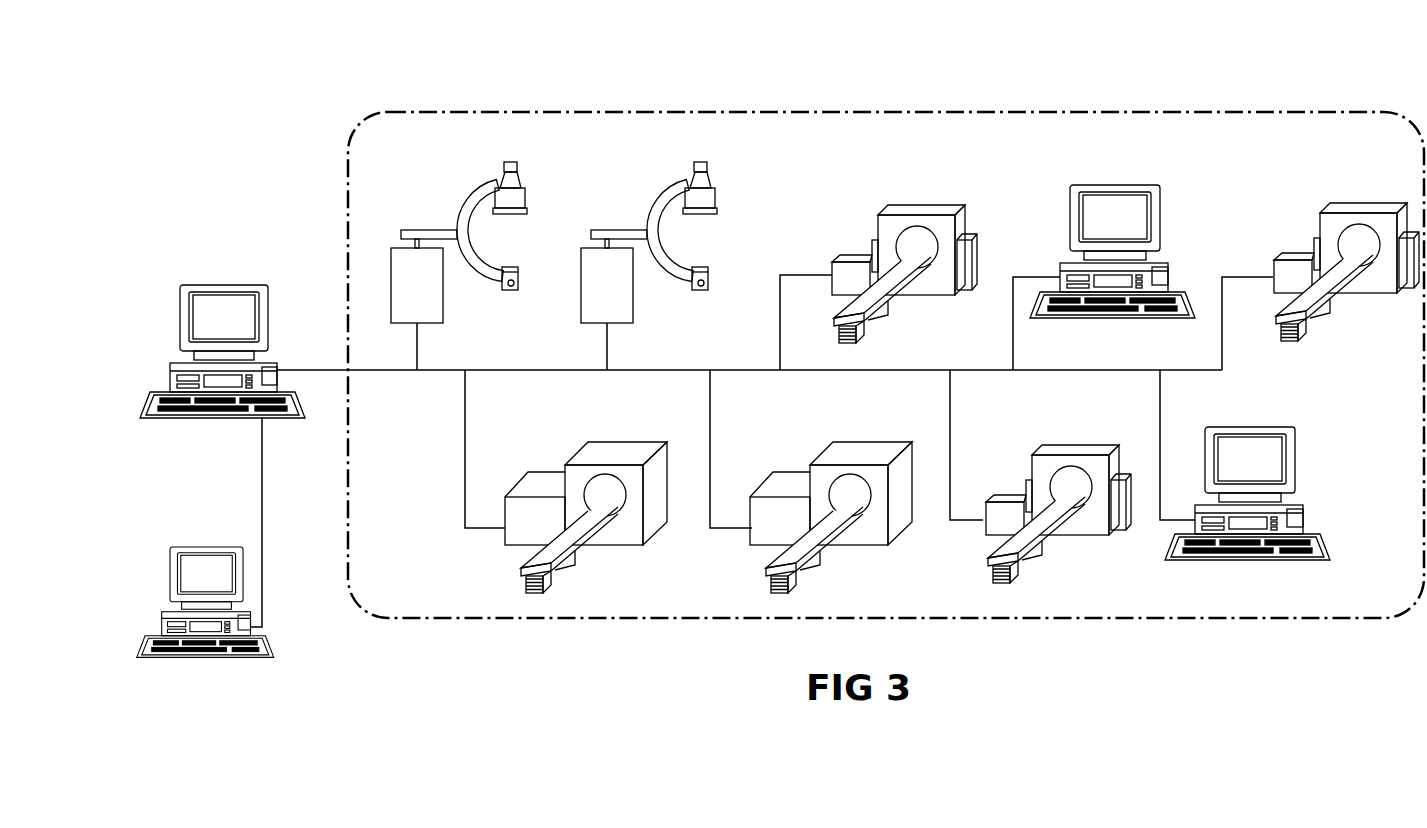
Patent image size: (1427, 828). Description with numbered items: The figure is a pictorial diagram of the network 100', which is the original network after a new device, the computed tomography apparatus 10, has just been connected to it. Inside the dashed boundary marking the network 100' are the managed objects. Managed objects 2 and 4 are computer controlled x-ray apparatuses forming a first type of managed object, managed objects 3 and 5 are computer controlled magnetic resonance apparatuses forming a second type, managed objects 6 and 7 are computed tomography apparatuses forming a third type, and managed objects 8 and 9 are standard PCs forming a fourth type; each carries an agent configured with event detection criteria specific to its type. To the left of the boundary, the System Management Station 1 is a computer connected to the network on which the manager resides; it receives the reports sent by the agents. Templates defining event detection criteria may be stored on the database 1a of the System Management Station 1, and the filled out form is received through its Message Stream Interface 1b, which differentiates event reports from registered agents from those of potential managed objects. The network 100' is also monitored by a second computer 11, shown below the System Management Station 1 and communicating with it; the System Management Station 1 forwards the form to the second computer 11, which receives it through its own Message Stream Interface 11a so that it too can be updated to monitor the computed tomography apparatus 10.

The System Management Station (SMS) 1 is at (240, 347).
The database 1a is at (219, 380).
The Message Stream Interface (MSI) 1b is at (304, 385).
The second computer 11 is at (235, 602).
The Message Stream Interface (MSI) 11a is at (290, 631).
The managed object 2 is at (397, 283).
The managed object 4 is at (587, 283).
The managed object 3 is at (518, 537).
The managed object 5 is at (760, 530).
The managed object 6 is at (841, 287).
The managed object 7 is at (992, 527).
The computed tomography apparatus 10 is at (1283, 288).
The managed object 8 is at (1170, 282).
The managed object 9 is at (1302, 516).
The network 100' is at (886, 335).